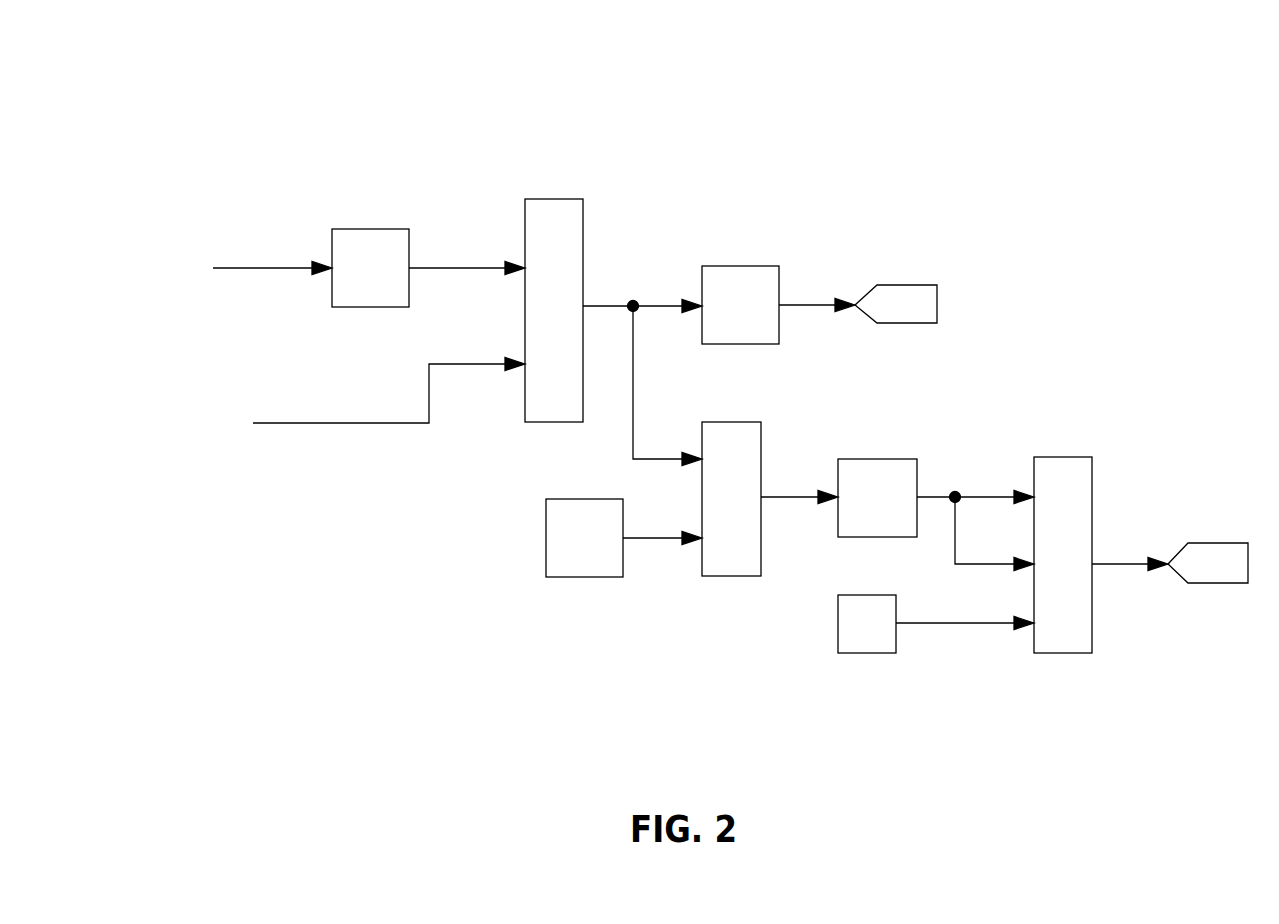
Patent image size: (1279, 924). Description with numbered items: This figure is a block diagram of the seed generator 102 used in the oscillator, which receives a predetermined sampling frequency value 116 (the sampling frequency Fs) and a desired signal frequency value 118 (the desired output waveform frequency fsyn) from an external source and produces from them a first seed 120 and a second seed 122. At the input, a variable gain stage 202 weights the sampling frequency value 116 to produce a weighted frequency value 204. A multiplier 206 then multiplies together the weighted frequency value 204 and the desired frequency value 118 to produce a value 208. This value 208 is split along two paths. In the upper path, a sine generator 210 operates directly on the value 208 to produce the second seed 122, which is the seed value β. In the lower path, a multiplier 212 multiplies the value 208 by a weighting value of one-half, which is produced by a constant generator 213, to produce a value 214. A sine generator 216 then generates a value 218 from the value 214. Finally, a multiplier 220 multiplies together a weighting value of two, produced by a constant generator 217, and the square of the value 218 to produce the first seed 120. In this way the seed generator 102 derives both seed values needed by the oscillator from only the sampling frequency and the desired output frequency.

The seed generator 102 is at (1004, 76).
The sampling frequency value 116 is at (266, 267).
The desired signal frequency value 118 is at (352, 424).
The first seed 120 is at (1124, 563).
The second seed 122 is at (812, 304).
The variable gain stage 202 is at (370, 229).
The weighted frequency value 204 is at (460, 269).
The multiplier 206 is at (552, 199).
The value 208 is at (607, 305).
The sine generator 210 is at (735, 266).
The multiplier 212 is at (730, 422).
The constant generator 213 is at (582, 499).
The value 214 is at (791, 496).
The sine generator 216 is at (880, 459).
The constant generator 217 is at (865, 595).
The value 218 is at (962, 491).
The multiplier 220 is at (1067, 457).